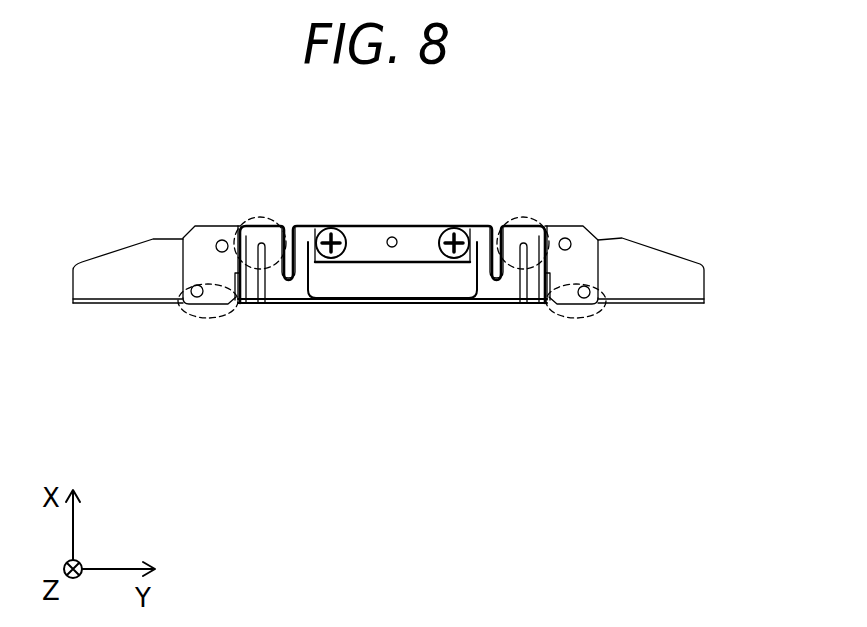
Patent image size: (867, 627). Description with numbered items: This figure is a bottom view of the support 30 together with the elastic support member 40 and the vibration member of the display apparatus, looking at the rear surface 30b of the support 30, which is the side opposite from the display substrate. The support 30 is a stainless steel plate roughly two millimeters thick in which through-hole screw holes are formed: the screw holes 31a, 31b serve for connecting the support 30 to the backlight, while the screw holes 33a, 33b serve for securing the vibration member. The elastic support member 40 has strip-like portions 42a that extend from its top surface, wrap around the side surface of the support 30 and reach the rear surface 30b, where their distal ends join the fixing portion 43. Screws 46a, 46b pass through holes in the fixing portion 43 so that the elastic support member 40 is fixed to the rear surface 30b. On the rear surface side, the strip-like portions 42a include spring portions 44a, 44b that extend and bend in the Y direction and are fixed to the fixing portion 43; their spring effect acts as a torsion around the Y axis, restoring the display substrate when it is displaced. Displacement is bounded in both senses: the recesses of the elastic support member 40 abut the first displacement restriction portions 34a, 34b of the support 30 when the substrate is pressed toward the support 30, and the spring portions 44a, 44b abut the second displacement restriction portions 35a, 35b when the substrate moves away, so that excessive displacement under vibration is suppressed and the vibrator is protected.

The support 30 is at (399, 273).
The rear surface 30b is at (616, 286).
The screw hole 31a is at (192, 302).
The screw hole 31b is at (598, 312).
The screw hole 33a is at (217, 239).
The screw hole 33b is at (567, 233).
The first displacement restriction portion 34a is at (207, 320).
The first displacement restriction portion 34b is at (558, 320).
The second displacement restriction portion 35a is at (258, 218).
The second displacement restriction portion 35b is at (502, 218).
The elastic support member 40 is at (668, 243).
The strip-like portion 42a is at (245, 305).
The fixing portion 43 is at (423, 233).
The spring portion 44a is at (275, 233).
The spring portion 44b is at (500, 235).
The screw 46a is at (333, 258).
The screw 46b is at (443, 259).